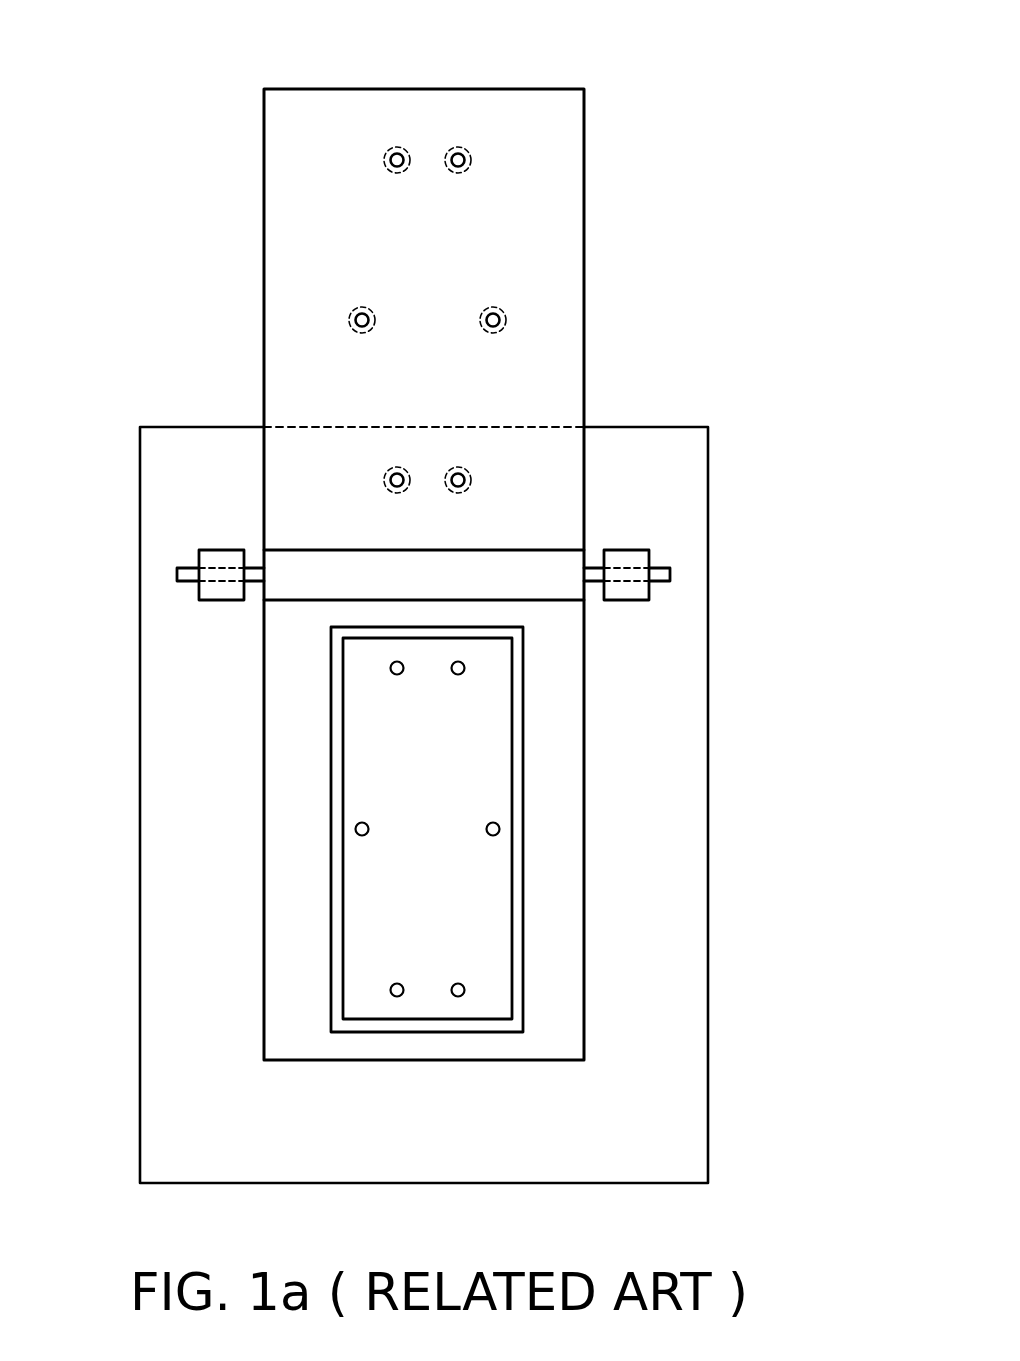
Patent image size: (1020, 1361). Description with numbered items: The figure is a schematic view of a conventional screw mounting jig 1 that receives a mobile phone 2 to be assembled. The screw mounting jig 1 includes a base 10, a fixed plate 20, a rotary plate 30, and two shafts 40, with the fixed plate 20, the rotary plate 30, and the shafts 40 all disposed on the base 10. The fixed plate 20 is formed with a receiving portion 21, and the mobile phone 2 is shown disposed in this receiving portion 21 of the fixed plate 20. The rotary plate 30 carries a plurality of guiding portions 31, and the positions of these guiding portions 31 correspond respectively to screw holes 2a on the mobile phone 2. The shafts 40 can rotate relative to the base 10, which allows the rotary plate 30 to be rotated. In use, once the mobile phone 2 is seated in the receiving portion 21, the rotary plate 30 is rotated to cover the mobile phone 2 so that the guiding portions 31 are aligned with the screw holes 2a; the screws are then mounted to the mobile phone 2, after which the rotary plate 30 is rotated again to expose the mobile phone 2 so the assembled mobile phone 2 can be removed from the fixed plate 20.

The screw mounting jig 1 is at (83, 16).
The base 10 is at (640, 716).
The rotary plate 30 is at (545, 120).
The guiding portions 31 is at (506, 320).
The shafts 40 is at (642, 558).
The fixed plate 20 is at (565, 1028).
The receiving portion 21 is at (518, 786).
The mobile phone 2 is at (493, 913).
The screw holes 2a is at (500, 829).